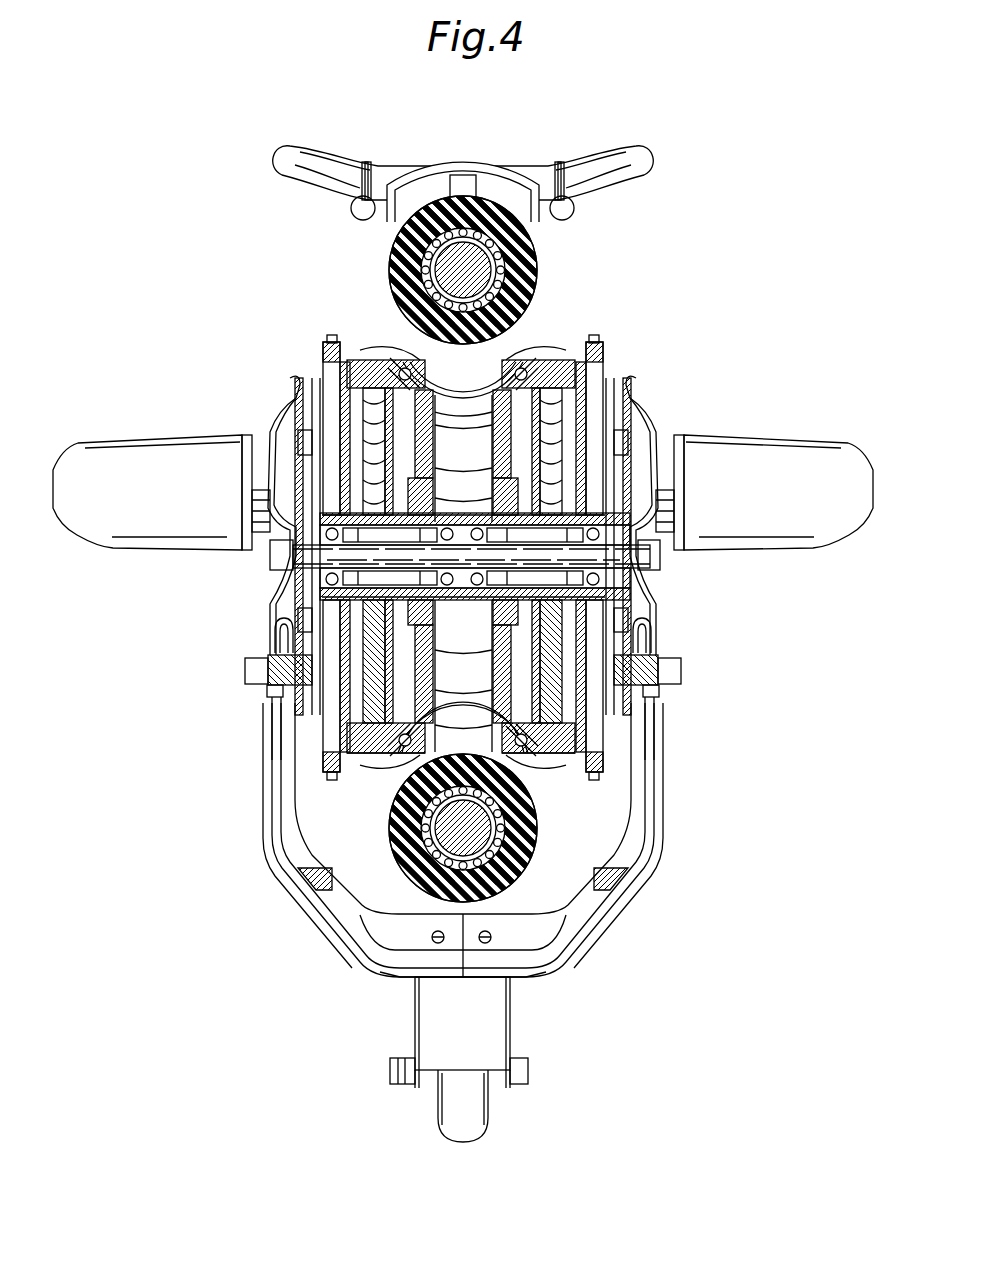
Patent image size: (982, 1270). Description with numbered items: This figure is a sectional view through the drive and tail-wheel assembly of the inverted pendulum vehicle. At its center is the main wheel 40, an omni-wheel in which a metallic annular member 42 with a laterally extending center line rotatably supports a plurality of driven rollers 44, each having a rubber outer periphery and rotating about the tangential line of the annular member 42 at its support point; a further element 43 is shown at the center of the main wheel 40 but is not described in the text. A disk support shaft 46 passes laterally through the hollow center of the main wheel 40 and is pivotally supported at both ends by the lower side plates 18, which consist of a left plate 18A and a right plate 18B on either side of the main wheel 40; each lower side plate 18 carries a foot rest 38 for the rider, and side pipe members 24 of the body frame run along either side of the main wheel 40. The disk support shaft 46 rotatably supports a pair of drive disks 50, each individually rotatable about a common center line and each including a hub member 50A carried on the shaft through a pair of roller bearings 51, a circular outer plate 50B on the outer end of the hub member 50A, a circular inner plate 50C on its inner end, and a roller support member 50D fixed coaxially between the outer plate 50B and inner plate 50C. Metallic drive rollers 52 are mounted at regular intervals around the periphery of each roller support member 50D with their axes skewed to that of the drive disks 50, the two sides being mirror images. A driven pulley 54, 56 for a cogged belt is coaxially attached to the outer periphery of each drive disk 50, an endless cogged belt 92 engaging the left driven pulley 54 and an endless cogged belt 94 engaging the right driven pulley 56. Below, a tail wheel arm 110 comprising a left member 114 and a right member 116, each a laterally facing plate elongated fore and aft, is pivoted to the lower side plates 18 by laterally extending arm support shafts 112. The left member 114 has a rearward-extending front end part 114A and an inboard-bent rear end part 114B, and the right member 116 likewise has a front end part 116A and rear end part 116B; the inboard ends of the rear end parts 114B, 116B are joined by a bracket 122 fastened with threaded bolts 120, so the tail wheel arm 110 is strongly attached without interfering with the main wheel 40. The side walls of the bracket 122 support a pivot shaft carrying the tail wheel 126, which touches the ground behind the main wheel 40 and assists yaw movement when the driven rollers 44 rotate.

The lower side plate 18 is at (268, 586).
The left plate 18A is at (272, 641).
The right plate 18B is at (272, 639).
The side pipe member 24 is at (352, 210).
The foot rest 38 is at (163, 447).
The main wheel 40 is at (548, 328).
The annular member 42 is at (408, 254).
The rotor shaft bearing 43 is at (480, 262).
The driven roller 44 is at (528, 266).
The disk support shaft 46 is at (668, 558).
The drive disk 50 is at (592, 385).
The hub member 50A is at (585, 468).
The outer plate 50B is at (640, 432).
The inner plate 50C is at (546, 355).
The roller support member 50D is at (598, 365).
The roller bearing 51 is at (477, 527).
The drive roller 52 is at (380, 362).
The driven pulley 54 is at (322, 352).
The driven pulley 56 is at (607, 751).
The endless cogged belt 92 is at (330, 338).
The endless cogged belt 94 is at (598, 345).
The tail wheel arm 110 is at (310, 898).
The arm support shaft 112 is at (265, 691).
The left member 114 is at (275, 813).
The front end part 114A is at (272, 714).
The rear end part 114B is at (408, 978).
The right member 116 is at (645, 822).
The front end part 116A is at (652, 716).
The rear end part 116B is at (520, 978).
The threaded bolt 120 is at (485, 943).
The bracket 122 is at (502, 1032).
The tail wheel 126 is at (478, 1136).